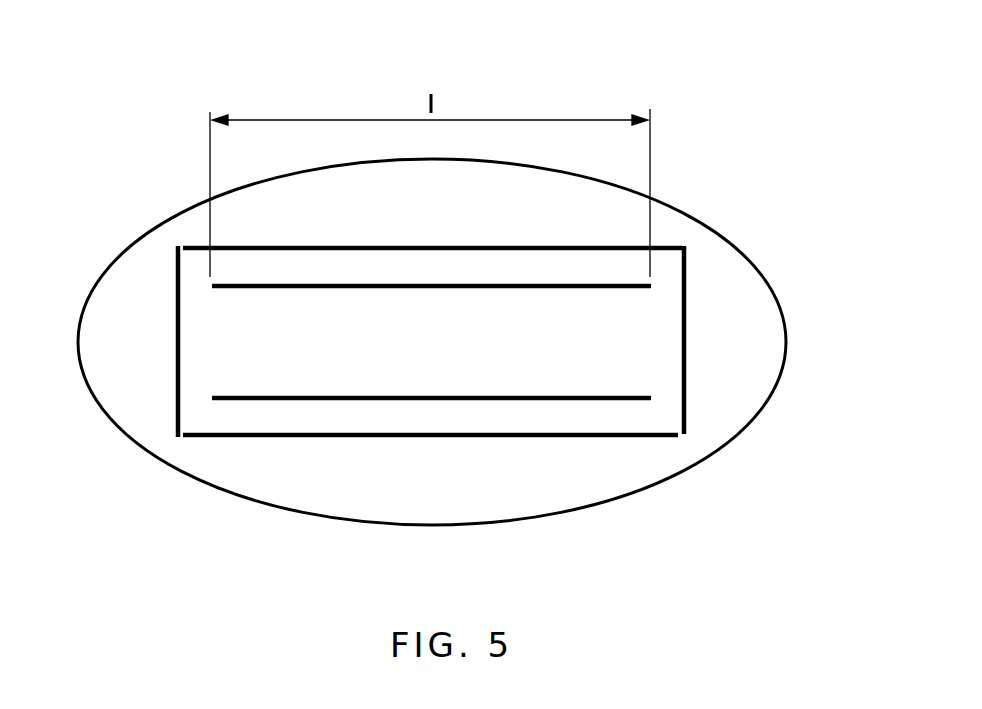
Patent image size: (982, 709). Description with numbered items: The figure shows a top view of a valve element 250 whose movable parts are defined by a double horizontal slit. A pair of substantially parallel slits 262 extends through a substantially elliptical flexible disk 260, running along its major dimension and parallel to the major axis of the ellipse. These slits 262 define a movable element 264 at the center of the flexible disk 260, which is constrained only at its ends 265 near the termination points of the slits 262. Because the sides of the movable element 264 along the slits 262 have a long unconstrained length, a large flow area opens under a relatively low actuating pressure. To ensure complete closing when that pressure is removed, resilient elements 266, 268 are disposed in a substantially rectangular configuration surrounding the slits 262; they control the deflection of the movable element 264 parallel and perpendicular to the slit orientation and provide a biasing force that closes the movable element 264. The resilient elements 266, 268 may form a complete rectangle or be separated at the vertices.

The valve element 250 is at (713, 513).
The flexible disk 260 is at (193, 460).
The slits 262 is at (610, 284).
The movable element 264 is at (228, 333).
The ends 265 is at (467, 217).
The resilient elements 266 is at (237, 246).
The resilient elements 268 is at (177, 378).